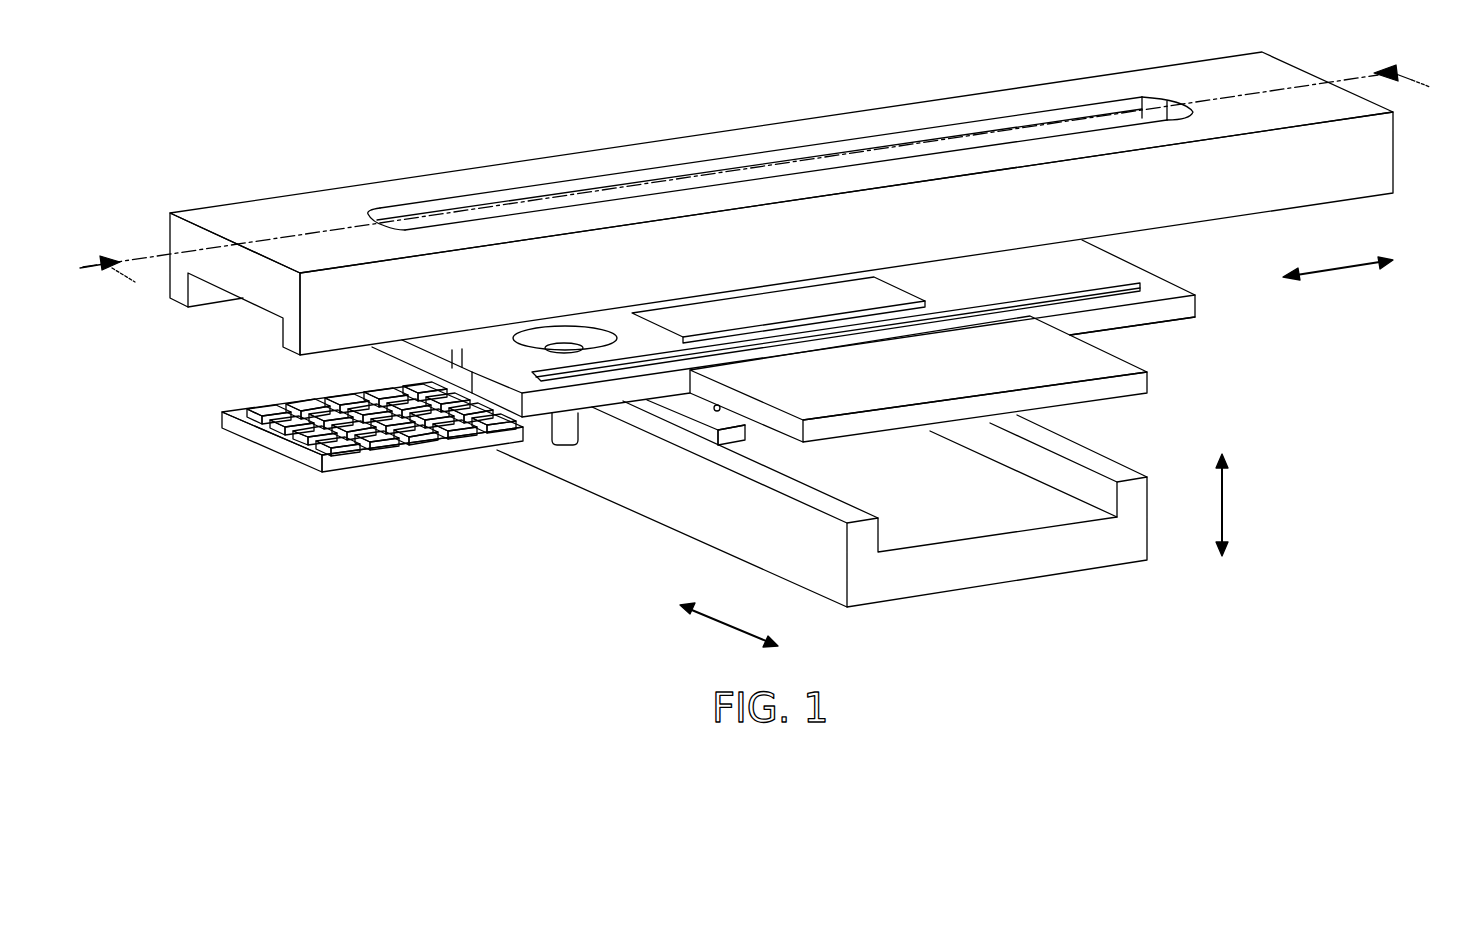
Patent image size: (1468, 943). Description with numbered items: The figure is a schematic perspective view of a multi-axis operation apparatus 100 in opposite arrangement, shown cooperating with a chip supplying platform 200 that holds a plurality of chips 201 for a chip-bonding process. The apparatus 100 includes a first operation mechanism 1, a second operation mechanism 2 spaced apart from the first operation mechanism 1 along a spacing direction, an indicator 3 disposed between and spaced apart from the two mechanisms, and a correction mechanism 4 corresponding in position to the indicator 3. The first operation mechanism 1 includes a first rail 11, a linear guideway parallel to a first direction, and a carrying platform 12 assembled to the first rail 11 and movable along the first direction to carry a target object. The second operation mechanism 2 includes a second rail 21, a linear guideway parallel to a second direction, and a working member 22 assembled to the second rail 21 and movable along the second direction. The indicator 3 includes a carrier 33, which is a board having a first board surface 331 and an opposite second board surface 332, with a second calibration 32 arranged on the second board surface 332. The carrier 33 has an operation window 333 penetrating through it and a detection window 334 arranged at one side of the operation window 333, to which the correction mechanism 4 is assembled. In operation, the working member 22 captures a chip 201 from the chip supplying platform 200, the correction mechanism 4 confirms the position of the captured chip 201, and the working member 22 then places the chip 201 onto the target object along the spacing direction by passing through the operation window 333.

The multi-axis operation apparatus 100 is at (762, 349).
The first operation mechanism 1 is at (822, 503).
The first rail 11 is at (588, 490).
The carrying platform 12 is at (665, 448).
The second operation mechanism 2 is at (781, 203).
The second rail 21 is at (432, 180).
The working member 22 is at (496, 325).
The indicator 3 is at (1115, 408).
The second calibration 32 is at (1130, 288).
The carrier 33 is at (815, 306).
The first board surface 331 is at (1170, 331).
The second board surface 332 is at (1045, 262).
The operation window 333 is at (904, 282).
The detection window 334 is at (600, 332).
The correction mechanism 4 is at (558, 448).
The chip supplying platform 200 is at (350, 441).
The chip 201 is at (257, 396).